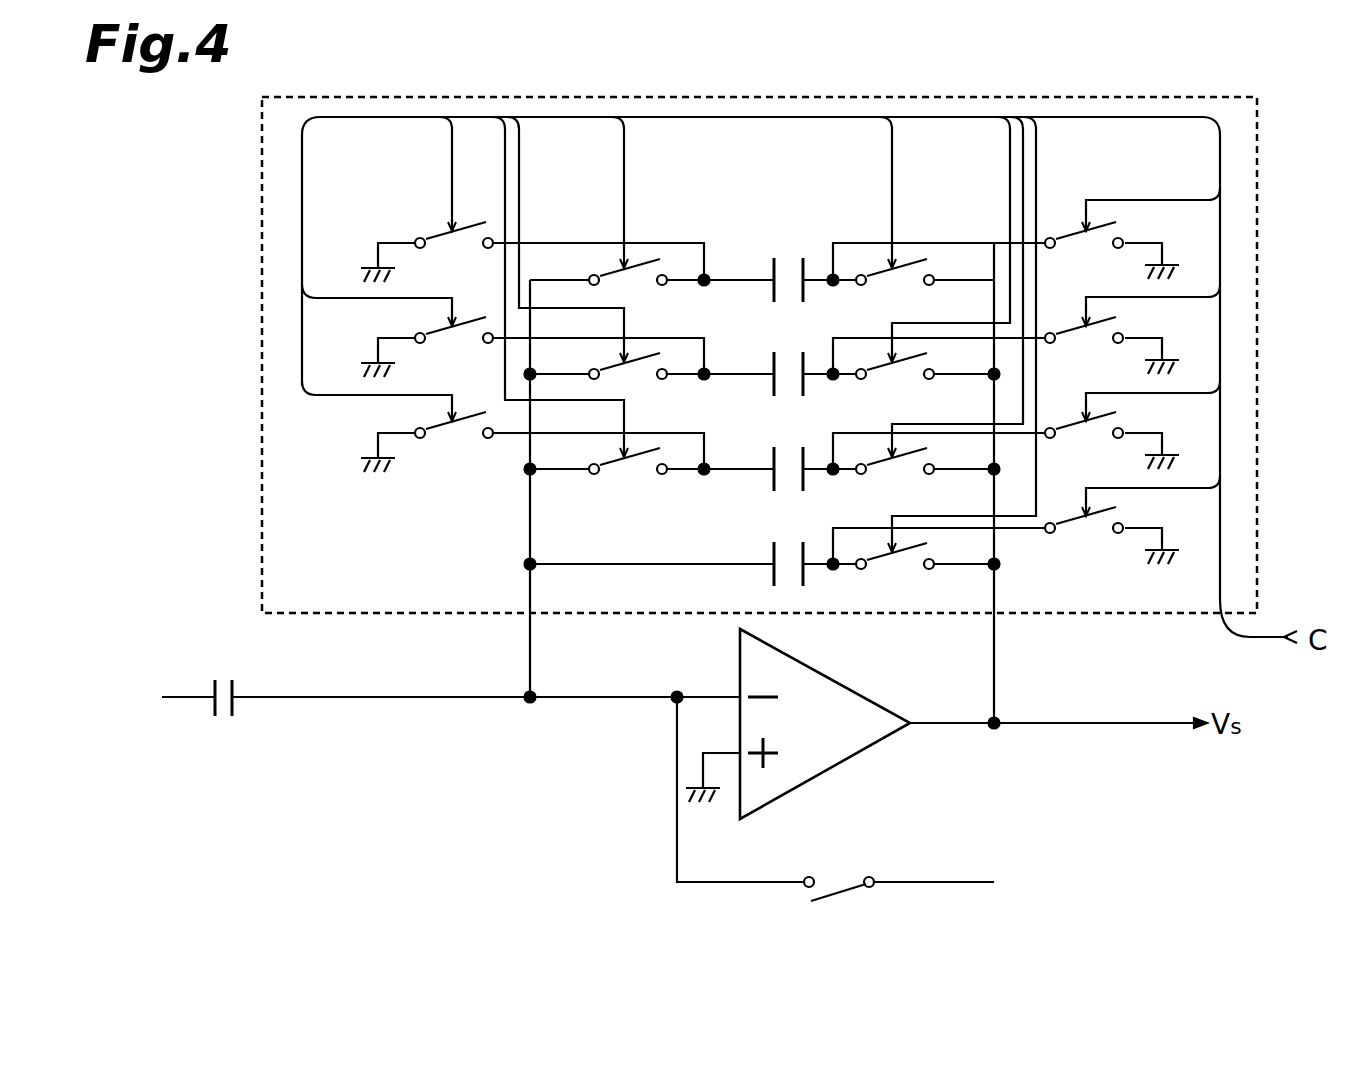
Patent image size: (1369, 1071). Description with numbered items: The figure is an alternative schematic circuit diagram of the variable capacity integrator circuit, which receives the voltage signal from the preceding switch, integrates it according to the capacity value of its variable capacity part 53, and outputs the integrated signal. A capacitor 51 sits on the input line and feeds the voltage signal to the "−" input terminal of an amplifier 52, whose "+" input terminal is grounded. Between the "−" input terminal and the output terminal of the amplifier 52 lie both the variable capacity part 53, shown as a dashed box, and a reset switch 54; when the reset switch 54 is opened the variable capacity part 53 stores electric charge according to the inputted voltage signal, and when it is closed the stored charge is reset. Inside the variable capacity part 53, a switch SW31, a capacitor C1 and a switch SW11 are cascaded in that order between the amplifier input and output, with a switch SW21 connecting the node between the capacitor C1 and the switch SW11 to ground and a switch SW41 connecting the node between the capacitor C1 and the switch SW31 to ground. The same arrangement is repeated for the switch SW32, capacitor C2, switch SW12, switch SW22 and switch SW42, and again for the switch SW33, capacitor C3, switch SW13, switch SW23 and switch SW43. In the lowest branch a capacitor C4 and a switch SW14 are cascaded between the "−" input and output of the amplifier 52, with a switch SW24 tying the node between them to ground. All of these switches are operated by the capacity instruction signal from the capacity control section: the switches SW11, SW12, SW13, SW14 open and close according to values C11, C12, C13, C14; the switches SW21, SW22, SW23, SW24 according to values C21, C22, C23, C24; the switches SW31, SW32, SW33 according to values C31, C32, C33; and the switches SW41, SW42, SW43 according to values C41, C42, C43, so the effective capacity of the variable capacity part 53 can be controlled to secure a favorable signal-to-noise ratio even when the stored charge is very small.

The capacitor 51 is at (221, 718).
The amplifier 52 is at (818, 778).
The variable capacity part 53 is at (262, 320).
The reset switch 54 is at (840, 872).
The capacitor C1 is at (765, 286).
The capacitor C2 is at (765, 380).
The capacitor C3 is at (765, 475).
The capacitor C4 is at (664, 569).
The switch SW11 is at (924, 280).
The switch SW12 is at (924, 374).
The switch SW13 is at (924, 469).
The switch SW14 is at (924, 563).
The switch SW21 is at (1112, 250).
The switch SW22 is at (1112, 345).
The switch SW23 is at (1112, 440).
The switch SW24 is at (1112, 536).
The switch SW31 is at (652, 288).
The switch SW32 is at (650, 382).
The switch SW33 is at (650, 477).
The switch SW41 is at (532, 252).
The switch SW42 is at (532, 347).
The switch SW43 is at (532, 442).
The capacity instruction signal value C11 is at (912, 192).
The capacity instruction signal value C12 is at (949, 239).
The capacity instruction signal value C13 is at (955, 287).
The capacity instruction signal value C14 is at (962, 334).
The capacity instruction signal value C21 is at (1151, 201).
The capacity instruction signal value C22 is at (1151, 297).
The capacity instruction signal value C23 is at (1151, 392).
The capacity instruction signal value C24 is at (1151, 486).
The capacity instruction signal value C31 is at (605, 192).
The capacity instruction signal value C32 is at (567, 239).
The capacity instruction signal value C33 is at (560, 287).
The capacity instruction signal value C41 is at (469, 174).
The capacity instruction signal value C42 is at (379, 305).
The capacity instruction signal value C43 is at (379, 403).